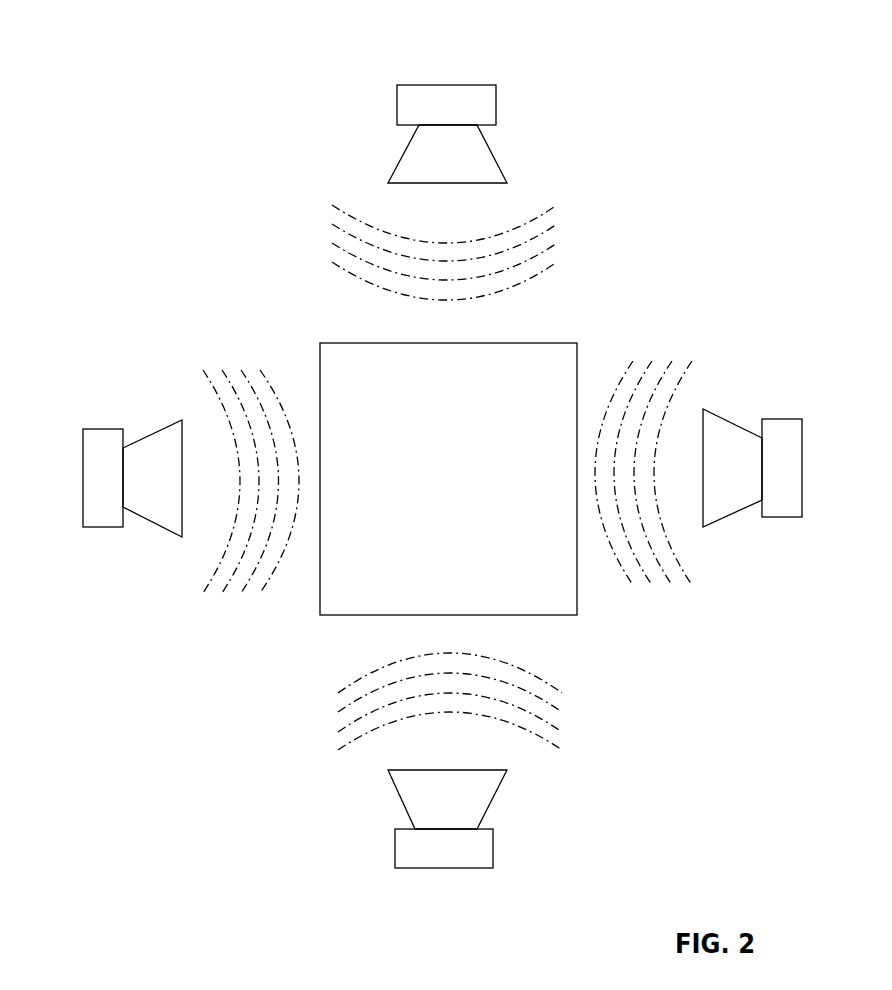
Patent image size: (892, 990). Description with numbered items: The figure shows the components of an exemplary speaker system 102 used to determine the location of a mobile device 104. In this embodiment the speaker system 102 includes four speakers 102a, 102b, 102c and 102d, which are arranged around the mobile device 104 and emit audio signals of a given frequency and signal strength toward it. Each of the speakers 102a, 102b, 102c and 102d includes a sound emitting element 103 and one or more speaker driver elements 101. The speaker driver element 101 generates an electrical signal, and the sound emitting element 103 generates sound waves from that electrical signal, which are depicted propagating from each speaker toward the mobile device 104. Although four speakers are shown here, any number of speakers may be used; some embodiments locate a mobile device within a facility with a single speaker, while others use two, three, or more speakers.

The speaker driver element 101 is at (126, 442).
The speaker system 102 is at (678, 155).
The speaker 102a is at (169, 479).
The speaker 102b is at (517, 842).
The speaker 102c is at (813, 478).
The speaker 102d is at (357, 125).
The sound emitting element 103 is at (138, 510).
The mobile device 104 is at (470, 517).